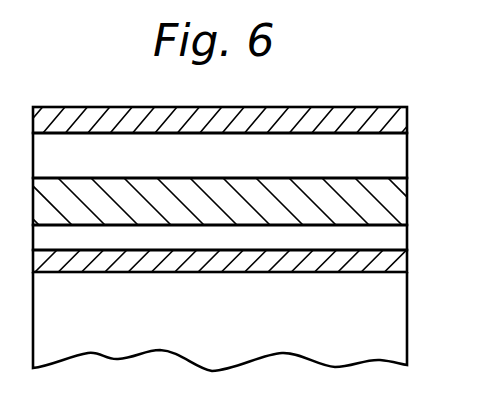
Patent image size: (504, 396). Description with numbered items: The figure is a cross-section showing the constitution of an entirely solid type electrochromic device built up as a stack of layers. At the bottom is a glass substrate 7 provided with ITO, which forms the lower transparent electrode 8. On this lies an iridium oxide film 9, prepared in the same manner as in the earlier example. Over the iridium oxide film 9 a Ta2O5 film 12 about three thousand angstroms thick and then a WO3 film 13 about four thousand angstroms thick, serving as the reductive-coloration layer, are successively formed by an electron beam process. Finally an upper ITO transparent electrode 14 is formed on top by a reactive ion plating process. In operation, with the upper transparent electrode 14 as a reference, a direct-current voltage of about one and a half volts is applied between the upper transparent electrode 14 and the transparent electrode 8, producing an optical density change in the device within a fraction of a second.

The upper ITO transparent electrode 14 is at (398, 121).
The WO3 film 13 is at (393, 154).
The Ta2O5 film 12 is at (392, 196).
The iridium oxide film 9 is at (398, 234).
The transparent electrode 8 is at (398, 261).
The glass substrate 7 is at (396, 313).